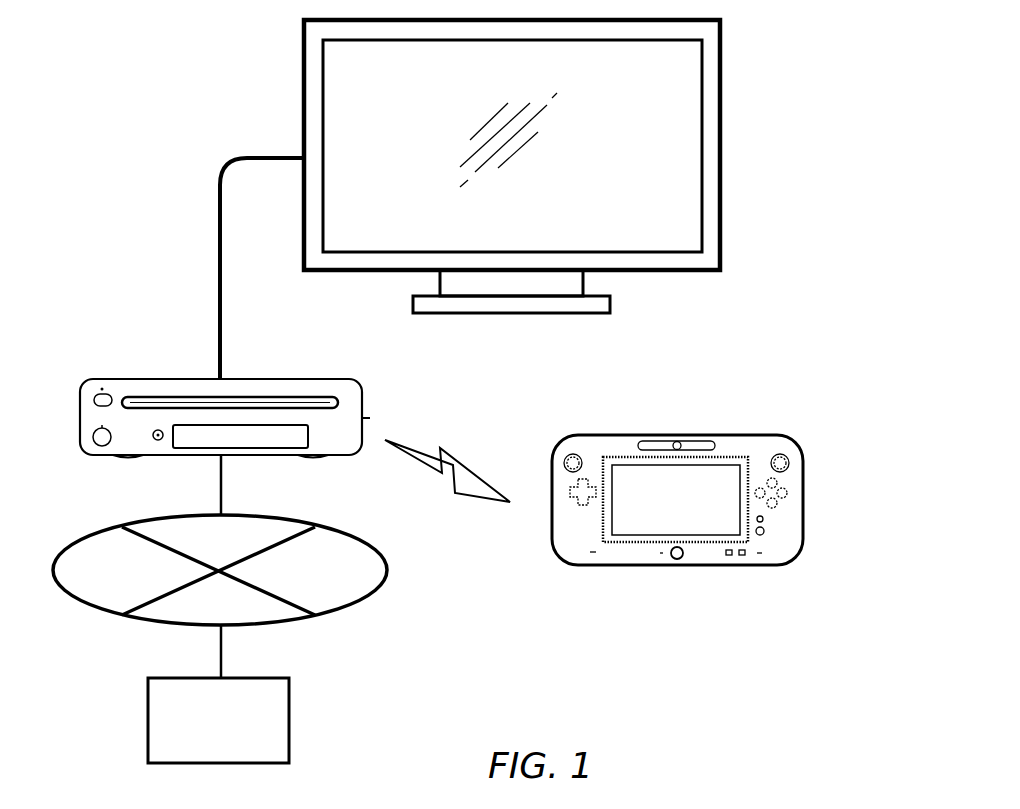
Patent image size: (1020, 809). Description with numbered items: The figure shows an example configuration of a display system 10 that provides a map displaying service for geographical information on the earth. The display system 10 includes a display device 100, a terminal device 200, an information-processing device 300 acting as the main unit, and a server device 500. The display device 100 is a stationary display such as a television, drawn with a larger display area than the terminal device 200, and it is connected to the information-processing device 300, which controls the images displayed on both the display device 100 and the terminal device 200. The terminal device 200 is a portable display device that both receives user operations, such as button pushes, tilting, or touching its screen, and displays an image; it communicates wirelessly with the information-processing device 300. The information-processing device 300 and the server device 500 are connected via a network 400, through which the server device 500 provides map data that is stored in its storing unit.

The display system 10 is at (100, 82).
The display device 100 is at (303, 80).
The terminal device 200 is at (718, 435).
The information-processing device 300 is at (160, 379).
The network 400 is at (386, 561).
The server device 500 is at (290, 705).